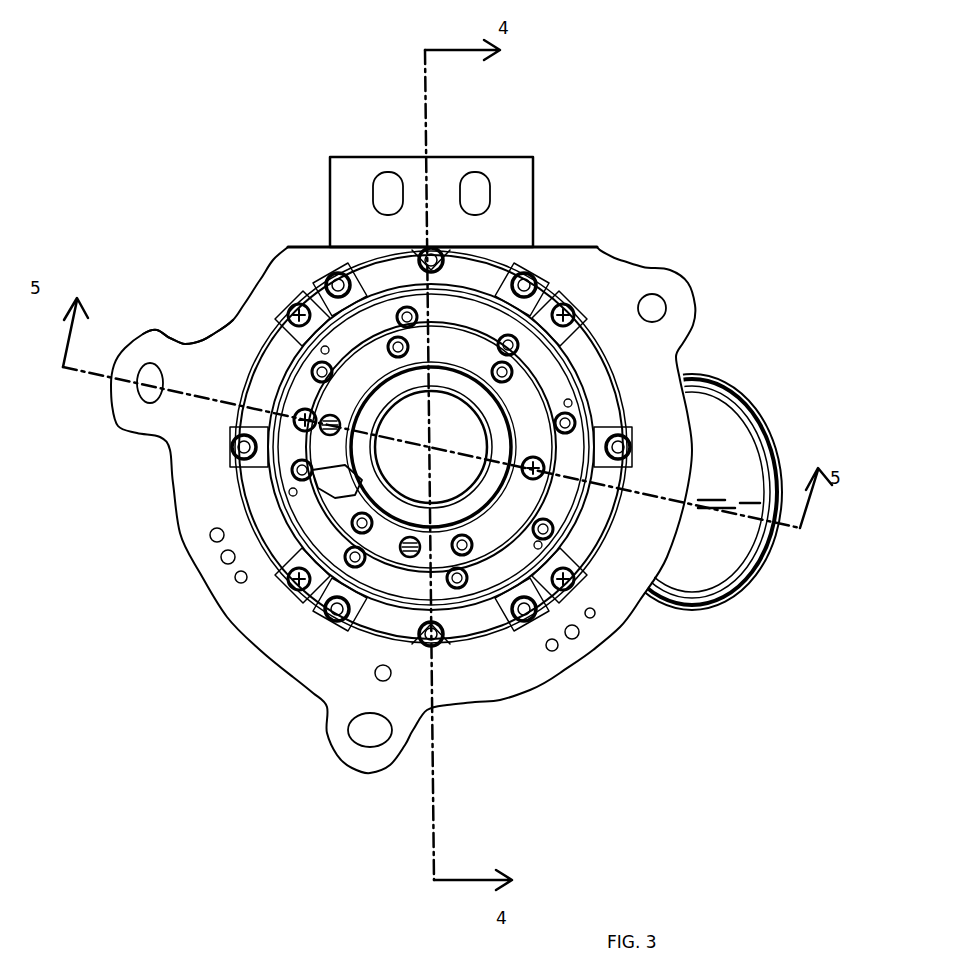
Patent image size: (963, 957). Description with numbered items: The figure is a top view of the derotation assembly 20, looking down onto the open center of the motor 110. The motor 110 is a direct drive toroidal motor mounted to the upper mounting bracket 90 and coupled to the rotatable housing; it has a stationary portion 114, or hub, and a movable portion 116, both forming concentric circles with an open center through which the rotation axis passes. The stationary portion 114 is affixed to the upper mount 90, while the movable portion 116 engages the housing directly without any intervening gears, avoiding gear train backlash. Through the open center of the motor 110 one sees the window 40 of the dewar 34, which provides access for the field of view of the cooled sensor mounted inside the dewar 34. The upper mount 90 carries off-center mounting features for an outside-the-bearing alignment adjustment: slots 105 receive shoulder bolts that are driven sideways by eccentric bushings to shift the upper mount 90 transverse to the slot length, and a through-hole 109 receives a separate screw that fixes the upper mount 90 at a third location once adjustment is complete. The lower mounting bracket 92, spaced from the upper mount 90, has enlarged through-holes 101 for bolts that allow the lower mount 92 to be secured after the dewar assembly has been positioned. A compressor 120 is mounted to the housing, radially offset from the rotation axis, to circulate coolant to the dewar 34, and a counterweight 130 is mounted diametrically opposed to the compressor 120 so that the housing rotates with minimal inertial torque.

The derotation assembly 20 is at (146, 177).
The lower mounting bracket 92 is at (340, 157).
The enlarged through-holes 101 is at (490, 194).
The motor 110 is at (337, 327).
The counterweight 130 is at (160, 333).
The through-hole 109 is at (667, 302).
The slots 105 is at (140, 402).
The upper mounting bracket 90 is at (192, 508).
The stationary portion 114 is at (305, 517).
The movable portion 116 is at (320, 600).
The dewar 34 is at (488, 495).
The window 40 is at (452, 475).
The compressor 120 is at (702, 552).